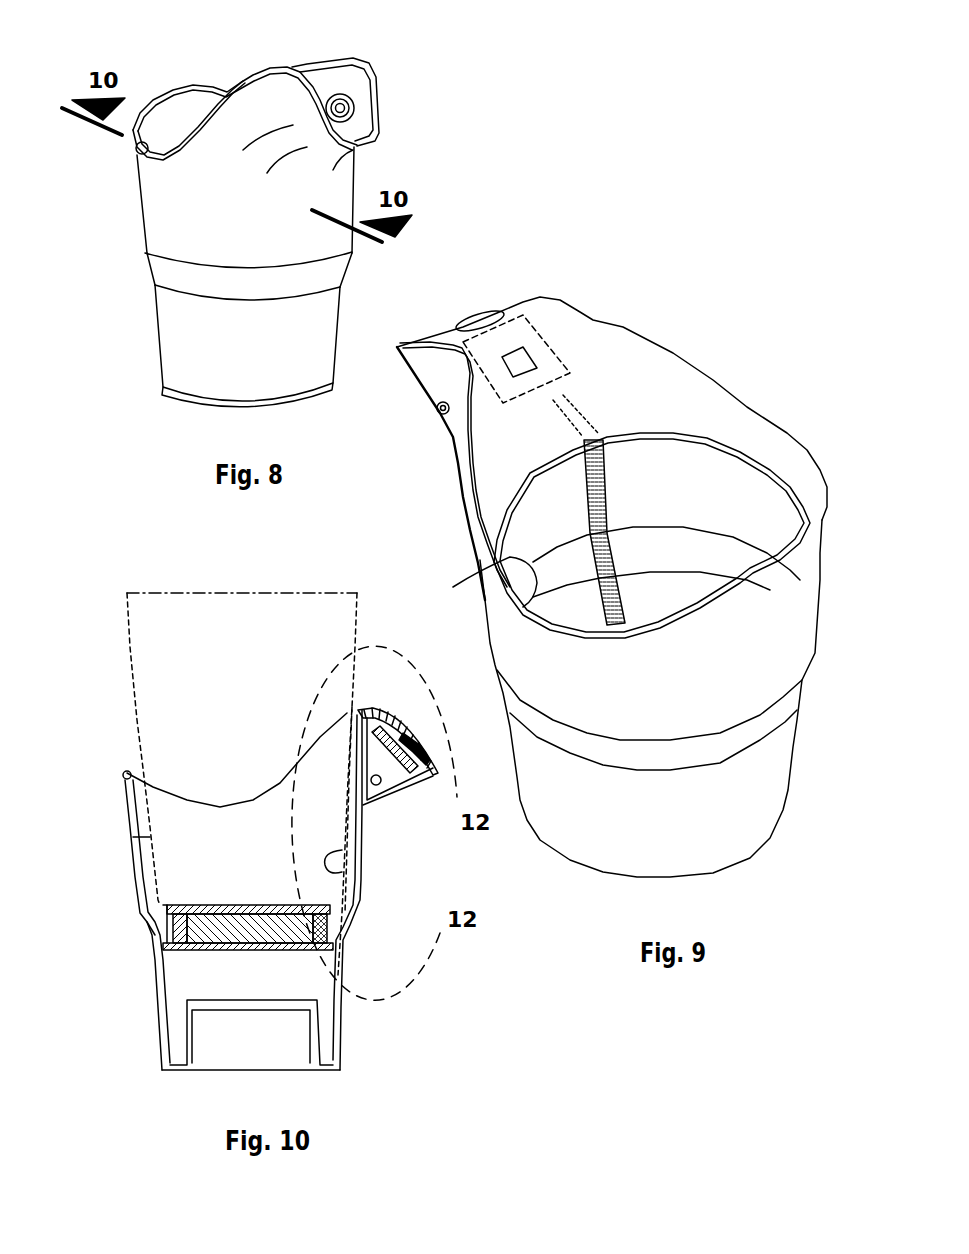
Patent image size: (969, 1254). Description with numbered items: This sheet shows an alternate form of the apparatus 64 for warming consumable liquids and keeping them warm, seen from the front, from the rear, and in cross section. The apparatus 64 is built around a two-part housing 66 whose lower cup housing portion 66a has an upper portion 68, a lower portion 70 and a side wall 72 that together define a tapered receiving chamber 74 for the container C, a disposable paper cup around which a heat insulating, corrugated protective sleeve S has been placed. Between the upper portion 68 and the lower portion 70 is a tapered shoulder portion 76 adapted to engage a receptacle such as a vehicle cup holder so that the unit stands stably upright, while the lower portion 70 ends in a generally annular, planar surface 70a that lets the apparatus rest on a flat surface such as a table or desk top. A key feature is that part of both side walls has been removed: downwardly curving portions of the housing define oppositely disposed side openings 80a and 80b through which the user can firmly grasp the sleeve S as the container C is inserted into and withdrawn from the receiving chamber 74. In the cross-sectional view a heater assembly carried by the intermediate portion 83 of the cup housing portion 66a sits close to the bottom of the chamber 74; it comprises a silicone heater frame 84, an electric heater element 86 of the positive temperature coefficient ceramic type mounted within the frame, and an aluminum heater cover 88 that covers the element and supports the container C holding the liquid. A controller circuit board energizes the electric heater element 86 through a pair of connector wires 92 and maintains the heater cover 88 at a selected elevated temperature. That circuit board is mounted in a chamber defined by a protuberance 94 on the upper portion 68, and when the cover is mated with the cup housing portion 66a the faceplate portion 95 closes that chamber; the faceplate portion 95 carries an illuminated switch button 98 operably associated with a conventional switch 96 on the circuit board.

In FIG. 8, the liquid heating apparatus 64 is at (402, 130).
In FIG. 8, the two-part housing 66 is at (148, 243).
In FIG. 10, the lower cup housing portion 66a is at (350, 937).
In FIG. 8, the upper portion 68 is at (245, 110).
In FIG. 8, the lower portion 70 is at (177, 383).
In FIG. 9, the lower portion 70 is at (757, 828).
In FIG. 10, the planar surface 70a is at (332, 1062).
In FIG. 8, the side wall 72 is at (249, 261).
In FIG. 10, the side wall 72 is at (140, 868).
In FIG. 9, the tapered receiving chamber 74 is at (655, 587).
In FIG. 10, the tapered receiving chamber 74 is at (343, 863).
In FIG. 8, the tapered shoulder portion 76 is at (153, 287).
In FIG. 9, the tapered shoulder portion 76 is at (780, 710).
In FIG. 10, the tapered shoulder portion 76 is at (147, 927).
In FIG. 9, the side opening 80a is at (472, 584).
In FIG. 8, the side opening 80b is at (133, 131).
In FIG. 9, the side opening 80b is at (787, 430).
In FIG. 10, the intermediate portion 83 is at (140, 947).
In FIG. 10, the silicone heater frame 84 is at (220, 950).
In FIG. 10, the electric heater element 86 is at (247, 937).
In FIG. 10, the aluminum heater cover 88 is at (252, 905).
In FIG. 9, the connector wires 92 is at (590, 423).
In FIG. 8, the protuberance 94 is at (276, 149).
In FIG. 9, the protuberance 94 is at (547, 360).
In FIG. 10, the protuberance 94 is at (383, 770).
In FIG. 8, the faceplate portion 95 is at (327, 83).
In FIG. 9, the faceplate portion 95 is at (523, 307).
In FIG. 10, the faceplate portion 95 is at (390, 710).
In FIG. 9, the switch 96 is at (520, 367).
In FIG. 8, the illuminated switch button 98 is at (350, 100).
In FIG. 9, the illuminated switch button 98 is at (477, 323).
In FIG. 10, the illuminated switch button 98 is at (417, 740).
In FIG. 10, the container C is at (127, 640).
In FIG. 10, the protective sleeve S is at (135, 717).